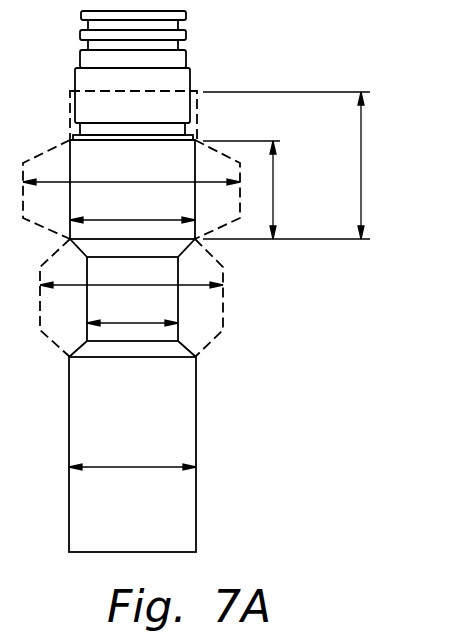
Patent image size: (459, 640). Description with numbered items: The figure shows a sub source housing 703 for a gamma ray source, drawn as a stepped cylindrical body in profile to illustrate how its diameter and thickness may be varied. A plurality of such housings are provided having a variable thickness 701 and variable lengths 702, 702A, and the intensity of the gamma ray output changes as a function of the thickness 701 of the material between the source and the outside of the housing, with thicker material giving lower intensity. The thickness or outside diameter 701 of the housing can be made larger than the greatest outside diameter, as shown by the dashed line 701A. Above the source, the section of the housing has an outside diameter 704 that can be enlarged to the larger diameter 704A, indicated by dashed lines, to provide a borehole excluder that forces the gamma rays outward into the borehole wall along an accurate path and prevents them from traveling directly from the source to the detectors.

The thickness 701 is at (132, 298).
The dashed line showing larger outside diameter 701A is at (131, 298).
The variable length 702 is at (273, 190).
The variable length 702A is at (361, 158).
The sub source housing 703 is at (132, 454).
The outside diameter 704 is at (132, 189).
The larger outside diameter 704A is at (131, 189).